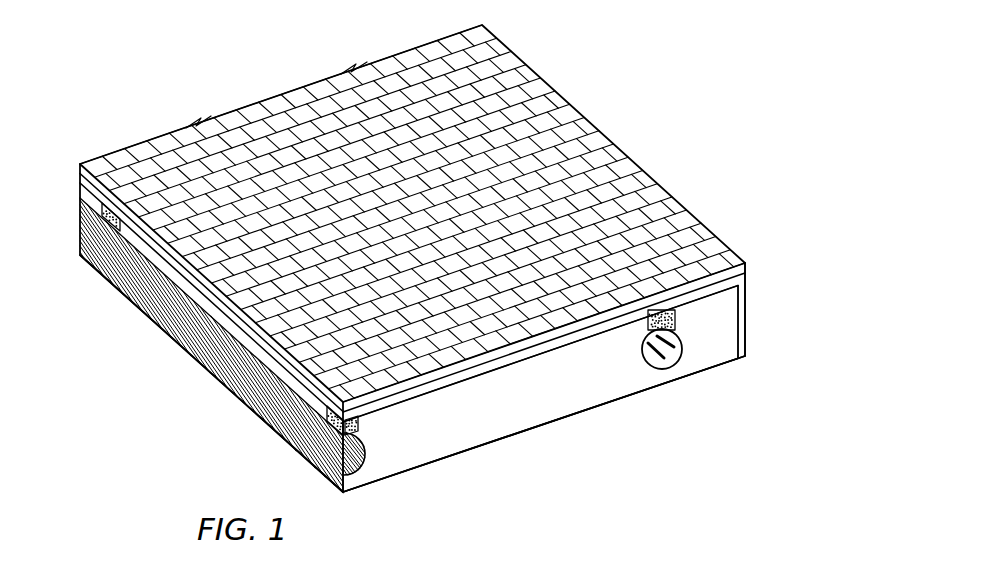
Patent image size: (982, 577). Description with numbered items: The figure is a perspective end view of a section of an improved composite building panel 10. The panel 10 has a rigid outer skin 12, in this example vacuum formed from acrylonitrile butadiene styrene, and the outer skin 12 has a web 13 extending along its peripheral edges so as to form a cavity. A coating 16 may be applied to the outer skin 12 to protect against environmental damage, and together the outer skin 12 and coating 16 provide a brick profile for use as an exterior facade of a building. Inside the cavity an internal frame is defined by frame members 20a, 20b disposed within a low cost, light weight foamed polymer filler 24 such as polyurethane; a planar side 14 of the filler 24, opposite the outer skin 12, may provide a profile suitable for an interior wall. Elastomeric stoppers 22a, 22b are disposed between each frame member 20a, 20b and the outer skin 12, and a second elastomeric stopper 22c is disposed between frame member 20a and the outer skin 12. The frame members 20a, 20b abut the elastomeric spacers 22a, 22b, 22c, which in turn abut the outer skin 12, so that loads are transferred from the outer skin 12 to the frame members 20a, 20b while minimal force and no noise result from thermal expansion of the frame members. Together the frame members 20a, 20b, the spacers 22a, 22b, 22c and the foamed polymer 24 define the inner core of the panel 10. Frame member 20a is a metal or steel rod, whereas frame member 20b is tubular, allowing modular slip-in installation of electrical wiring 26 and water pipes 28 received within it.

The composite panel 10 is at (592, 68).
The outer skin 12 is at (720, 288).
The web 13 is at (742, 318).
The planar side 14 is at (520, 433).
The coating 16 is at (600, 183).
The frame member 20a is at (361, 468).
The frame member 20b is at (682, 357).
The elastomeric stopper 22a is at (362, 427).
The elastomeric stopper 22b is at (677, 315).
The second elastomeric stopper 22c is at (110, 205).
The foamed polymer filler 24 is at (531, 396).
The electrical wiring 26 is at (647, 367).
The water pipes 28 is at (665, 328).